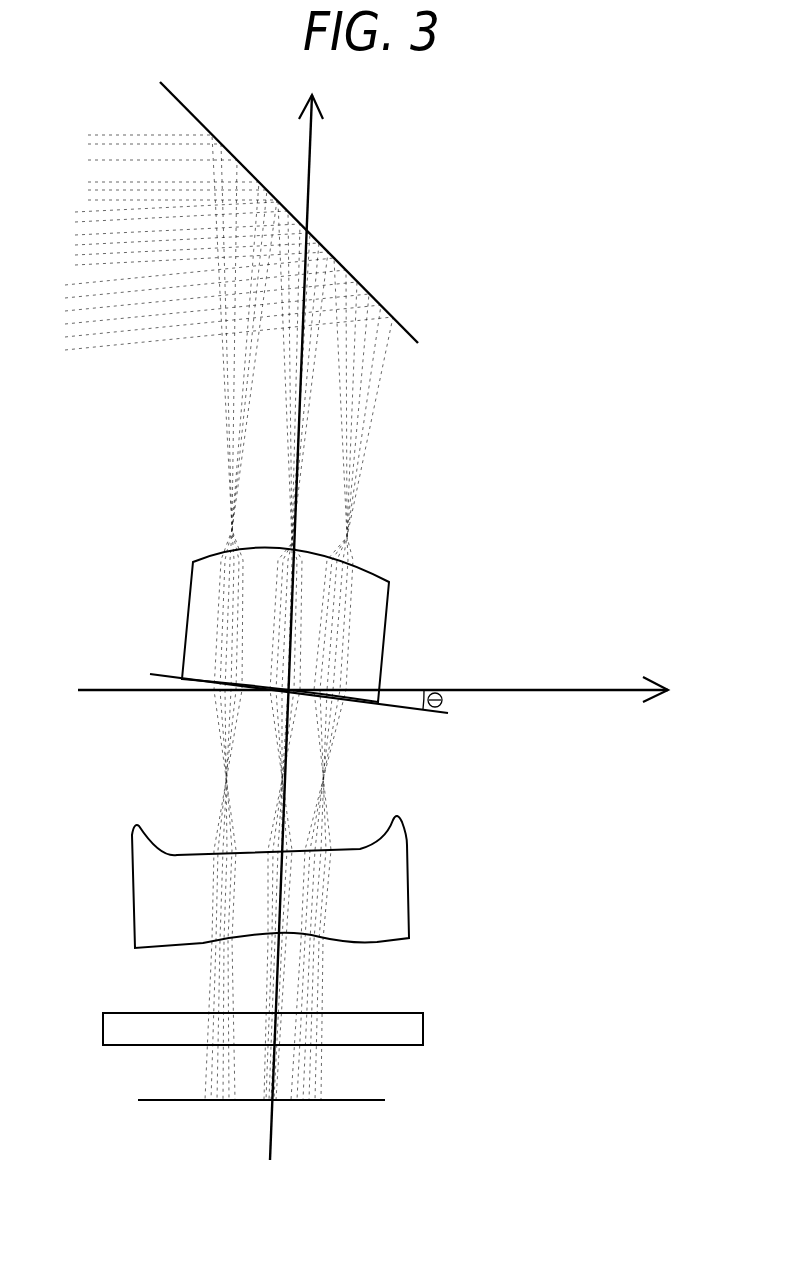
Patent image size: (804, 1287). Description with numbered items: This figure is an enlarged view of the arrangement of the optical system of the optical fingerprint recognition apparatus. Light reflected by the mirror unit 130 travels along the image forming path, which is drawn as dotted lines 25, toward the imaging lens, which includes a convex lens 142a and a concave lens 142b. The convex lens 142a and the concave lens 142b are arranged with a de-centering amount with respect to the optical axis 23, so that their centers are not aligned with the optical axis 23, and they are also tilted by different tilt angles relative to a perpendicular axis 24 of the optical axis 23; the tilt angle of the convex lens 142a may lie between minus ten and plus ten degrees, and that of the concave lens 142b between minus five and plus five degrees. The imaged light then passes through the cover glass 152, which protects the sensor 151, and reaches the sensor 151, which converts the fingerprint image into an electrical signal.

The optical axis 23 is at (312, 196).
The mirror unit 130 is at (398, 323).
The light rays 25 is at (373, 380).
The convex lens 142a is at (386, 606).
The perpendicular axis 24 is at (535, 690).
The concave lens 142b is at (398, 873).
The cover glass 152 is at (415, 1023).
The sensor 151 is at (373, 1102).